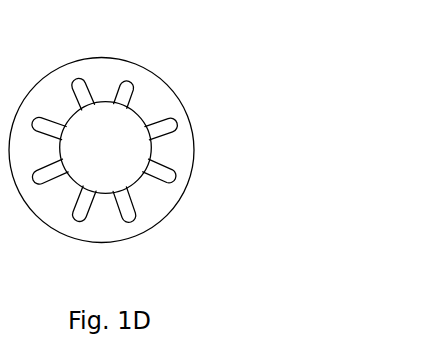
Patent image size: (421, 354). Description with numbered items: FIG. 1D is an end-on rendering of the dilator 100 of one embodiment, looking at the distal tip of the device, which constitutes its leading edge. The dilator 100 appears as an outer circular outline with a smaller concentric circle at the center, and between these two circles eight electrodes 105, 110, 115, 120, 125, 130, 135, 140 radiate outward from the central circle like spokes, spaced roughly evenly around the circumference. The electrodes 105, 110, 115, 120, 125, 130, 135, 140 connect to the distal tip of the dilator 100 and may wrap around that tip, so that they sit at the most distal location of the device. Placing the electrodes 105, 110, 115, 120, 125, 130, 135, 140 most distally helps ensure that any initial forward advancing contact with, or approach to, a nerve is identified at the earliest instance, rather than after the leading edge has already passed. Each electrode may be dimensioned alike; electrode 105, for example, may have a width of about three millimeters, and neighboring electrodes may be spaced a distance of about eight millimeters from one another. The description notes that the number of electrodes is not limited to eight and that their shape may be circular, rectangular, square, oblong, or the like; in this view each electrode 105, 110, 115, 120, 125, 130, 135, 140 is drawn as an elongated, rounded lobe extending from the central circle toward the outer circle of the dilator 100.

The dilator 100 is at (250, 83).
The electrode 105 is at (131, 85).
The electrode 110 is at (80, 83).
The electrode 115 is at (45, 122).
The electrode 120 is at (42, 180).
The electrode 125 is at (77, 213).
The electrode 130 is at (133, 217).
The electrode 135 is at (170, 175).
The electrode 140 is at (171, 123).